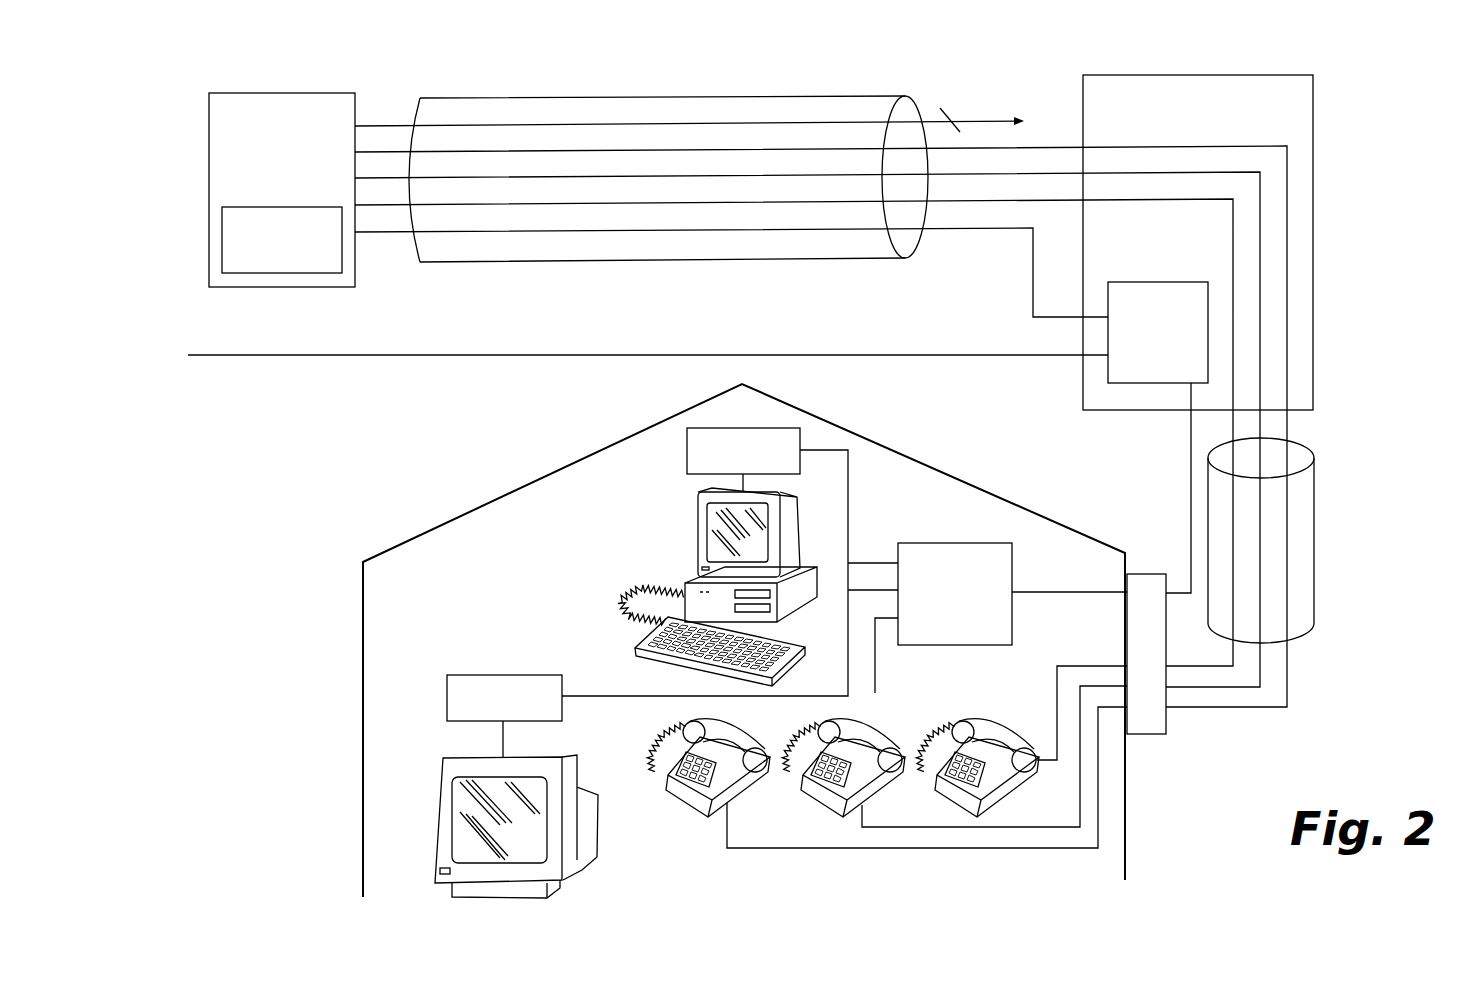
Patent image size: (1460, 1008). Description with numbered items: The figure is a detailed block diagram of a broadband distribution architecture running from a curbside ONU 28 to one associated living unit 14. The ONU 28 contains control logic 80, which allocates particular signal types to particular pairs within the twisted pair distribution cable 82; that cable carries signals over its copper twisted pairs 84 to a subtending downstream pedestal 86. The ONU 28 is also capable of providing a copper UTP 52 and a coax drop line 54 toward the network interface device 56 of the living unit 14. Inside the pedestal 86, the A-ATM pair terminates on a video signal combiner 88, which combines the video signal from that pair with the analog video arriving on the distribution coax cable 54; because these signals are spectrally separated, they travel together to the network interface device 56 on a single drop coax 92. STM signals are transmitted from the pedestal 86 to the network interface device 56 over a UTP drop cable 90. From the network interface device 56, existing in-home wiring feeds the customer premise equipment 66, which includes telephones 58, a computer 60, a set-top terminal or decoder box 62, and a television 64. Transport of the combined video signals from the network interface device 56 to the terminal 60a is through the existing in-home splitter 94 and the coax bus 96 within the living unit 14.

The living unit 14 is at (363, 630).
The ONU 28 is at (225, 287).
The copper UTP 52 is at (1414, 232).
The coax drop line 54 is at (187, 371).
The network interface device 56 is at (1166, 734).
The telephones 58 is at (933, 714).
The computers 60 is at (697, 525).
The terminals 60a is at (687, 452).
The set-top terminals 62 is at (453, 675).
The televisions 64 is at (442, 758).
The customer premise equipment 66 is at (524, 520).
The control logic 80 is at (290, 273).
The twisted pair distribution cable 82 is at (821, 401).
The copper twisted pairs 84 is at (1055, 146).
The pedestal 86 is at (1313, 102).
The video signal combiner 88 is at (1163, 282).
The UTP drop cable 90 is at (1314, 560).
The drop coax 92 is at (1191, 479).
The splitter 94 is at (925, 543).
The coax bus 96 is at (1081, 598).